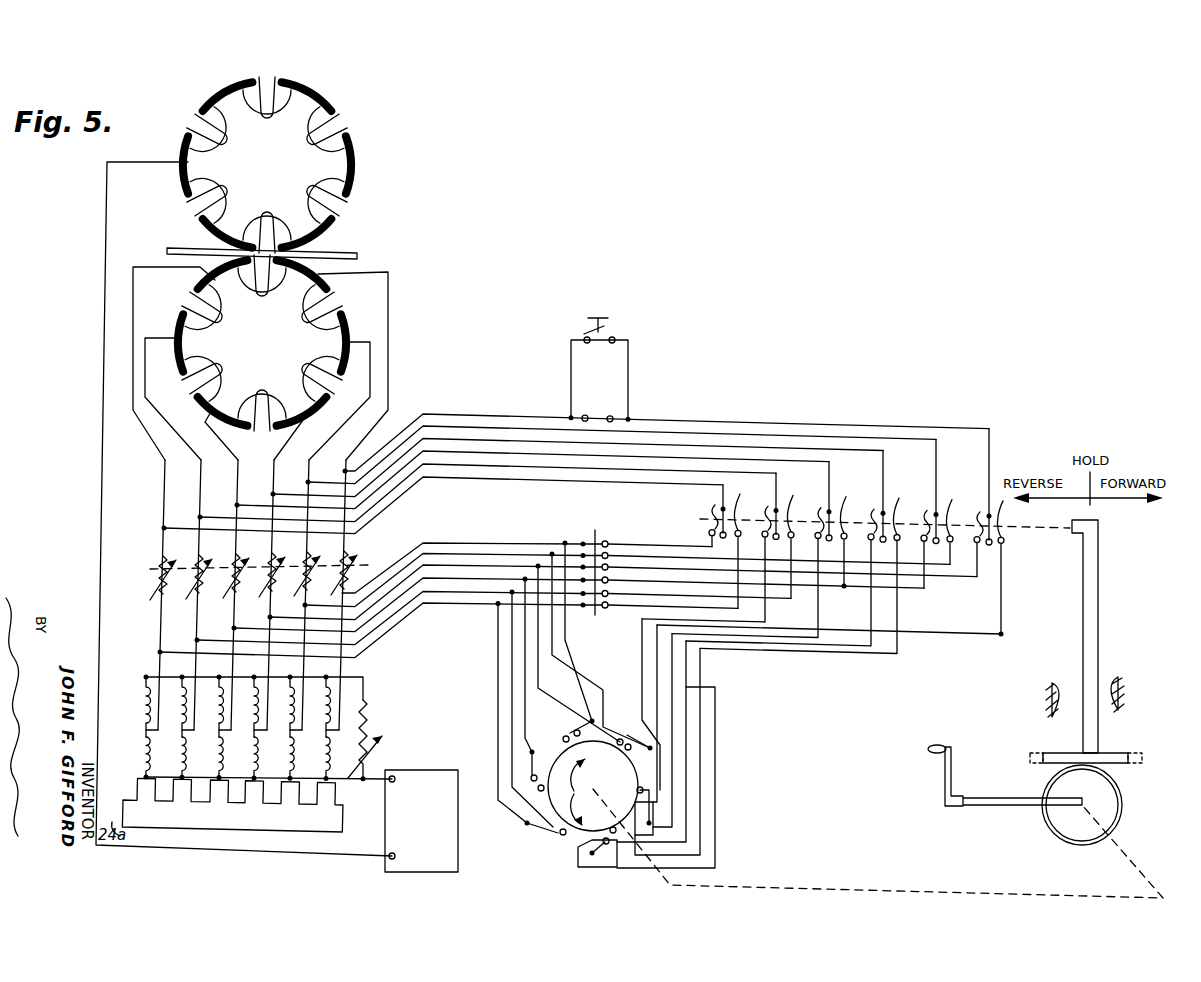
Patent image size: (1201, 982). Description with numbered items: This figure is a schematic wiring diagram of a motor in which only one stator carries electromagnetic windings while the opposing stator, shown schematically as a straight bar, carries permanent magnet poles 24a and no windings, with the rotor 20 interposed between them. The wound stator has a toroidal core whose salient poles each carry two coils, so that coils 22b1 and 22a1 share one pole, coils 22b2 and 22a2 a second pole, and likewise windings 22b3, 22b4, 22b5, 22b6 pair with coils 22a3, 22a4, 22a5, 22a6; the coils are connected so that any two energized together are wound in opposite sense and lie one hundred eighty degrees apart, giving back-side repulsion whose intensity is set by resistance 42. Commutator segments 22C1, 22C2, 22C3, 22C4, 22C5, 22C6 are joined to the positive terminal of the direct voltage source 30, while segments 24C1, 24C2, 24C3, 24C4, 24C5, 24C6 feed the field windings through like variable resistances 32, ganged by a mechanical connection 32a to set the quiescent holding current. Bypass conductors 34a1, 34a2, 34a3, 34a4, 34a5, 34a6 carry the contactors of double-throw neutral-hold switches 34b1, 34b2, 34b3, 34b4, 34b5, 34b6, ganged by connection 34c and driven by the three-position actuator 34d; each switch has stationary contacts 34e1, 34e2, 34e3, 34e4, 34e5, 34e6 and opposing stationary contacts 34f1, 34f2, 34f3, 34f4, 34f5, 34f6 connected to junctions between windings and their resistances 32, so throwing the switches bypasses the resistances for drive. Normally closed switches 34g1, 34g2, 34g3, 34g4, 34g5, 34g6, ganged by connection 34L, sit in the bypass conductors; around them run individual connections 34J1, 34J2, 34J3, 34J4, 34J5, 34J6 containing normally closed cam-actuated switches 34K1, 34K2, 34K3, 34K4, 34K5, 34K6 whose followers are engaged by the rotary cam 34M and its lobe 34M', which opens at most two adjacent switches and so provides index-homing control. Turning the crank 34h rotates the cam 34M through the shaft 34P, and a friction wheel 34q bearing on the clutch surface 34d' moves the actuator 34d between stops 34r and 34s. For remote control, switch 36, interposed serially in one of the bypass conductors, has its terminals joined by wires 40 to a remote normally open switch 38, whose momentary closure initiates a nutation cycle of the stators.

The motor rotor 20 is at (356, 251).
The commutator segment 22C1 is at (198, 220).
The commutator segment 22C2 is at (178, 156).
The commutator segment 22C3 is at (229, 97).
The commutator segment 22C4 is at (310, 102).
The commutator segment 22C5 is at (353, 162).
The commutator segment 22C6 is at (331, 224).
The commutator segment 24C1 is at (164, 270).
The commutator segment 24C2 is at (176, 321).
The commutator segment 24C3 is at (232, 433).
The commutator segment 24C4 is at (316, 408).
The commutator segment 24C5 is at (353, 319).
The commutator segment 24C6 is at (363, 270).
The permanent magnet poles 24a is at (232, 805).
The coil 22a1 is at (334, 680).
The coil 22a2 is at (299, 684).
The coil 22a3 is at (263, 690).
The coil 22a4 is at (145, 692).
The coil 22a5 is at (181, 684).
The coil 22a6 is at (218, 686).
The stator field winding 22b1 is at (142, 742).
The stator field winding 22b2 is at (178, 746).
The stator field winding 22b3 is at (214, 746).
The stator field winding 22b4 is at (250, 746).
The stator field winding 22b5 is at (285, 746).
The stator field winding 22b6 is at (322, 746).
The direct voltage source 30 is at (426, 772).
The variable resistance 32 is at (308, 577).
The mechanical connection 32a is at (368, 574).
The bypass conductor 34a1 is at (426, 478).
The bypass conductor 34a2 is at (430, 467).
The bypass conductor 34a3 is at (432, 453).
The bypass conductor 34a4 is at (436, 438).
The bypass conductor 34a5 is at (432, 425).
The bypass conductor 34a6 is at (431, 413).
The double-throw neutral-hold switch 34b1 is at (717, 514).
The double-throw neutral-hold switch 34b2 is at (781, 504).
The double-throw neutral-hold switch 34b3 is at (834, 503).
The double-throw neutral-hold switch 34b4 is at (888, 500).
The double-throw neutral-hold switch 34b5 is at (941, 500).
The double-throw neutral-hold switch 34b6 is at (991, 495).
The mechanical connection 34c is at (1034, 534).
The three-position actuator 34d is at (1106, 636).
The clutch surface 34d' is at (1092, 743).
The stationary contact 34e1 is at (710, 531).
The stationary contact 34e2 is at (710, 559).
The stationary contact 34e3 is at (753, 569).
The stationary contact 34e4 is at (787, 573).
The stationary contact 34e5 is at (919, 544).
The stationary contact 34e6 is at (969, 538).
The opposing stationary contact 34f1 is at (750, 544).
The opposing stationary contact 34f2 is at (805, 541).
The opposing stationary contact 34f3 is at (858, 536).
The opposing stationary contact 34f4 is at (815, 569).
The opposing stationary contact 34f5 is at (963, 524).
The opposing stationary contact 34f6 is at (1004, 540).
The normally closed switch 34g1 is at (608, 606).
The normally closed switch 34g2 is at (608, 594).
The normally closed switch 34g3 is at (606, 581).
The normally closed switch 34g4 is at (606, 569).
The normally closed switch 34g5 is at (606, 556).
The normally closed switch 34g6 is at (606, 543).
The crank 34h is at (965, 796).
The individual bypass connection 34J1 is at (662, 622).
The individual bypass connection 34J2 is at (665, 630).
The individual bypass connection 34J3 is at (673, 641).
The individual bypass connection 34J4 is at (686, 651).
The individual bypass connection 34J5 is at (700, 659).
The individual bypass connection 34J6 is at (715, 687).
The cam-actuated switch 34K1 is at (550, 829).
The cam-actuated switch 34K2 is at (526, 766).
The cam-actuated switch 34K3 is at (562, 730).
The cam-actuated switch 34K4 is at (639, 738).
The cam-actuated switch 34K5 is at (653, 806).
The cam-actuated switch 34K6 is at (608, 860).
The mechanical connection 34L is at (589, 536).
The rotary cam 34M is at (593, 786).
The cam lobe 34M' is at (590, 773).
The connecting shaft 34P is at (838, 884).
The friction wheel 34q is at (1124, 802).
The stop 34r is at (1052, 684).
The stop 34s is at (1118, 677).
The switch 36 is at (594, 412).
The remote normally open switch 38 is at (588, 330).
The wires 40 is at (570, 374).
The resistance 42 is at (378, 742).